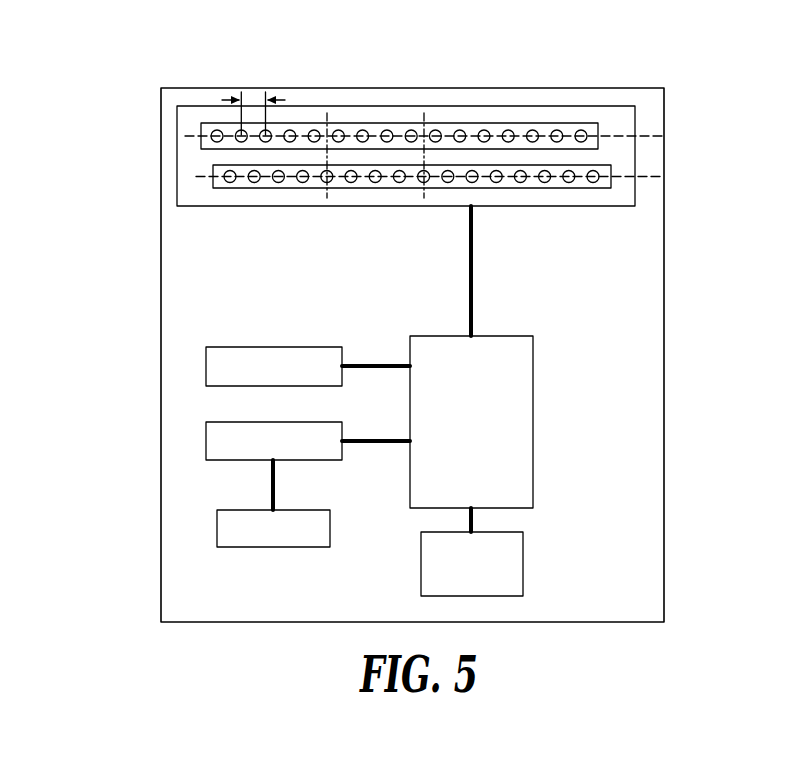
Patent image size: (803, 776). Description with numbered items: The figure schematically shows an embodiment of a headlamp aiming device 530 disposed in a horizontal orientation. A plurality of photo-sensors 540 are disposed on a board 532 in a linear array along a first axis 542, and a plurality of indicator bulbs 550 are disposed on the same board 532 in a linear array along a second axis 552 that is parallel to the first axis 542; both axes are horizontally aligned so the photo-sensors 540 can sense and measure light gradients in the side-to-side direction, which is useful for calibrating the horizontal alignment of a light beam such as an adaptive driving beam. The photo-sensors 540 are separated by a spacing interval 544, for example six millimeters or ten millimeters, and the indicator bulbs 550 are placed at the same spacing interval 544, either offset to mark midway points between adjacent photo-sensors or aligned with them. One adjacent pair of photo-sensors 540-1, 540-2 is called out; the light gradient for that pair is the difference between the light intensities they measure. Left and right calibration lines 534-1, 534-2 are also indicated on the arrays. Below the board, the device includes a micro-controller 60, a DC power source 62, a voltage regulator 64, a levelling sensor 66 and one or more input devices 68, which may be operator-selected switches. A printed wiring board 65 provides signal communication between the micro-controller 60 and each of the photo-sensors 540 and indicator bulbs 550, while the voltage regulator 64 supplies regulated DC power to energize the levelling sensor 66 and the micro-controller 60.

The headlamp aiming device 530 is at (157, 308).
The board 532 is at (205, 207).
The photo-sensors 540 is at (342, 90).
The photo-sensor 540-1 is at (291, 130).
The photo-sensor 540-2 is at (315, 130).
The first axis 542 is at (650, 135).
The spacing interval 544 is at (253, 99).
The indicator bulbs 550 is at (208, 166).
The second axis 552 is at (648, 178).
The left calibration line 534-1 is at (327, 182).
The right calibration line 534-2 is at (421, 182).
The micro-controller 60 is at (452, 335).
The DC power source 62 is at (232, 509).
The voltage regulator 64 is at (220, 421).
The printed wiring board 65 is at (478, 262).
The levelling sensor 66 is at (272, 346).
The input devices 68 is at (420, 553).